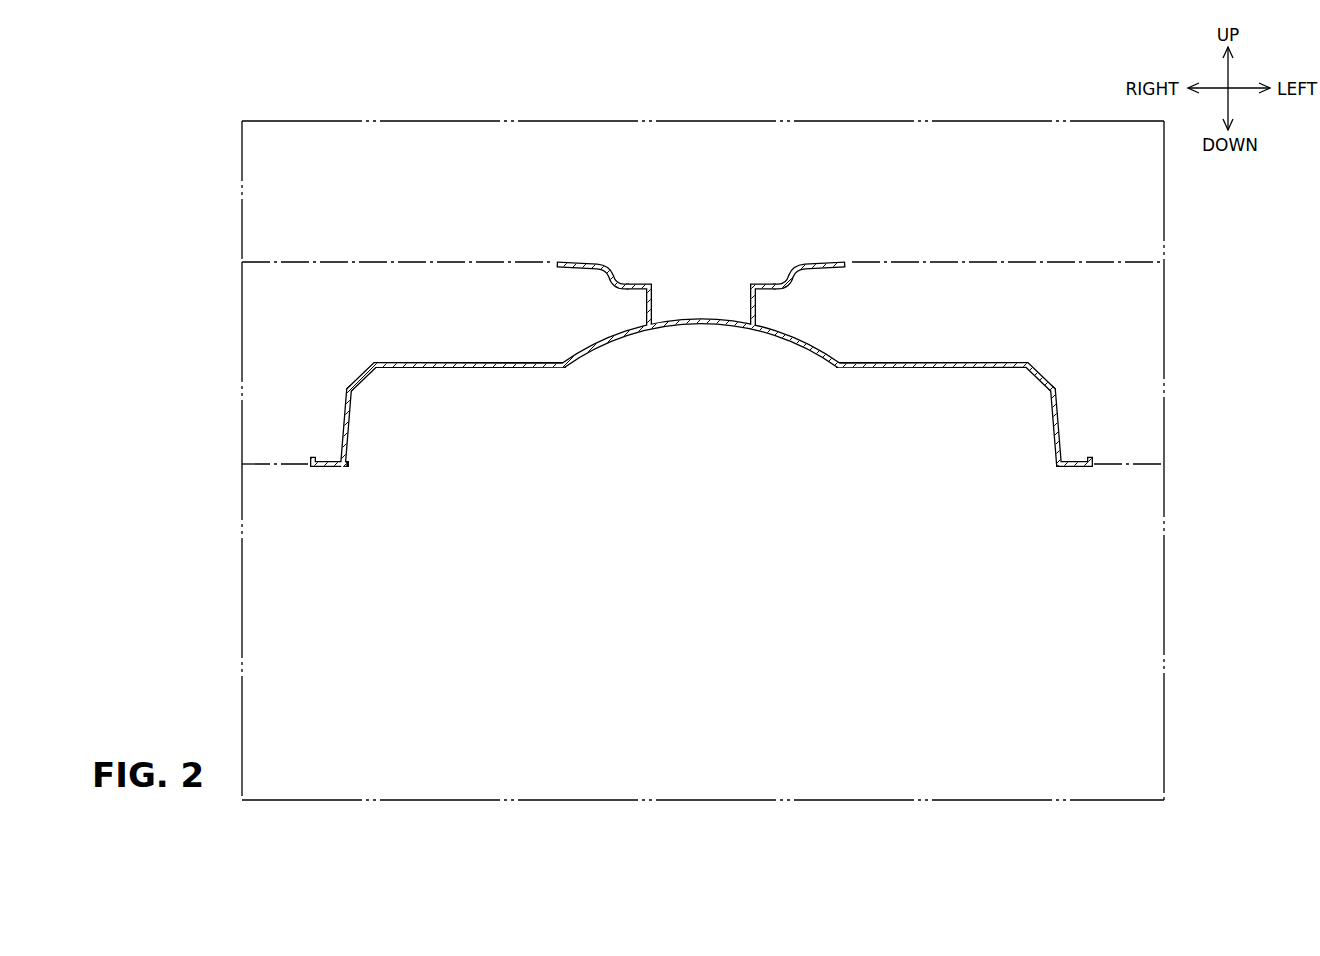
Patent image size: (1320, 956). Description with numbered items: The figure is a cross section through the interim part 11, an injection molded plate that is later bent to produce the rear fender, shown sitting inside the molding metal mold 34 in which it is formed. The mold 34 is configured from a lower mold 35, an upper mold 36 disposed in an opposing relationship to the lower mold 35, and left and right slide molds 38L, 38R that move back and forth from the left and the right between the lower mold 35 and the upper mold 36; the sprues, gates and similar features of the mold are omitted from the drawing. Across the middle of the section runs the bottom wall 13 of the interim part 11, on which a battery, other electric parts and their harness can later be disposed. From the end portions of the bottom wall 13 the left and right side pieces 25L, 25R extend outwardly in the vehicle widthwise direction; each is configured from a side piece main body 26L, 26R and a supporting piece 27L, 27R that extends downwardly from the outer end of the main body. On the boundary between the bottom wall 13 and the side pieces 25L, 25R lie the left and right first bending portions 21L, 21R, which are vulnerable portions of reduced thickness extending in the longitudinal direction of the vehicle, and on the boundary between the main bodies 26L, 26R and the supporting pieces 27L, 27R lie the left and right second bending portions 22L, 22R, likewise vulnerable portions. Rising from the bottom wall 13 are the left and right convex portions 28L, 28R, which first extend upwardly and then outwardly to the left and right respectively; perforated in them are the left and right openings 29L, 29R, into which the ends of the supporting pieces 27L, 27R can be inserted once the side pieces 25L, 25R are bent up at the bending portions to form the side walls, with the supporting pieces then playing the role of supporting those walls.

The interim part 11 is at (784, 183).
The bottom wall 13 is at (705, 318).
The right first bending portion 21R is at (508, 369).
The left first bending portion 21L is at (895, 369).
The right second bending portion 22R is at (380, 369).
The left second bending portion 22L is at (1020, 369).
The right side piece 25R is at (431, 472).
The left side piece 25L is at (976, 472).
The right side piece main body 26R is at (470, 369).
The left side piece main body 26L is at (933, 369).
The right supporting piece 27R is at (351, 433).
The left supporting piece 27L is at (1035, 480).
The right convex portion 28R is at (573, 262).
The left convex portion 28L is at (832, 262).
The right opening 29R is at (627, 283).
The left opening 29L is at (777, 283).
The molding metal mold 34 is at (942, 121).
The lower mold 35 is at (242, 624).
The upper mold 36 is at (242, 190).
The right slide mold 38R is at (242, 372).
The left slide mold 38L is at (1164, 364).